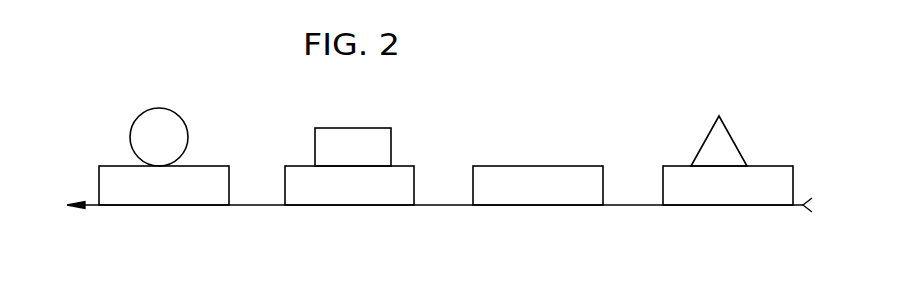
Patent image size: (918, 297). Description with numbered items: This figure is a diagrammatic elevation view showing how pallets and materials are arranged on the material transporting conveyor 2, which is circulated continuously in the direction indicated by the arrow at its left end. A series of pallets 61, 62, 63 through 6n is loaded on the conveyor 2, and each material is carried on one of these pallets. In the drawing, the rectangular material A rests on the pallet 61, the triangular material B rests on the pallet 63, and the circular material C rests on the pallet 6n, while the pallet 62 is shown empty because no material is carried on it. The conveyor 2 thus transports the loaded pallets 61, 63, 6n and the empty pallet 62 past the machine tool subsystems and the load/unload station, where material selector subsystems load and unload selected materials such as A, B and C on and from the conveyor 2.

The material transporting conveyor 2 is at (273, 205).
The pallet 6n is at (154, 203).
The pallet 61 is at (387, 202).
The pallet 62 is at (546, 202).
The pallet 63 is at (733, 199).
The material A is at (386, 143).
The material B is at (703, 138).
The material C is at (186, 136).